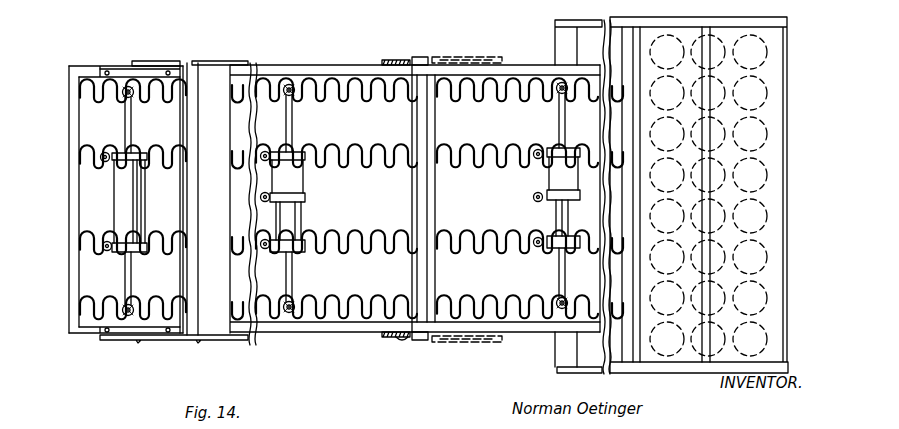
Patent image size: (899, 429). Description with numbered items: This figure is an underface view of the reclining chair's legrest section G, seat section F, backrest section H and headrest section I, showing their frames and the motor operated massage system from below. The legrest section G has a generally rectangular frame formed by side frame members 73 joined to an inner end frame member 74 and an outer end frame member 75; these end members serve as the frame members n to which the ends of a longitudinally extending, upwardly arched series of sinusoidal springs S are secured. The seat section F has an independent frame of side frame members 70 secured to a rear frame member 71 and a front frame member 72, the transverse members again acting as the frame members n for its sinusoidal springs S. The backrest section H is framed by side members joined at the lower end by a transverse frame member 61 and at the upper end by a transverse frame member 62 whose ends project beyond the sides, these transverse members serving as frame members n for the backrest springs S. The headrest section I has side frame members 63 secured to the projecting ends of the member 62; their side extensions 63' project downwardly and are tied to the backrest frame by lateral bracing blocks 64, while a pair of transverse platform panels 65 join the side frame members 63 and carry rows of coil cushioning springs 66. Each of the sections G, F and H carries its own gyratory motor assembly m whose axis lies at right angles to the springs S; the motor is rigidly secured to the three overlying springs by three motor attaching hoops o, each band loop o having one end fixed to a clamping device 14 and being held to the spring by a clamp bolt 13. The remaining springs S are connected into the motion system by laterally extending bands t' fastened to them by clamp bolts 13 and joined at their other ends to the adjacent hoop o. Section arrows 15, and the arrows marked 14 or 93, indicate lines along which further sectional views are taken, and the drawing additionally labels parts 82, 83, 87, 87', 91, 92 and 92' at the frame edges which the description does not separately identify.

The clamp bolt 13 is at (128, 90).
The clamping device 14 is at (242, 5).
The section line 15 is at (262, 40).
The transverse frame member 61 is at (436, 124).
The transverse frame member 62 is at (638, 40).
The side frame member 63 is at (699, 198).
The side extension 63' is at (559, 373).
The lateral bracing block 64 is at (566, 34).
The transverse platform panel 65 is at (704, 30).
The coil cushioning spring 66 is at (766, 82).
The side frame member 70 is at (266, 66).
The rear frame member 71 is at (414, 120).
The front frame member 72 is at (210, 88).
The side frame member 73 is at (84, 67).
The inner end frame member 74 is at (192, 179).
The outer end frame member 75 is at (70, 130).
The block 82 is at (420, 61).
The plate 83 is at (488, 56).
The hatched plate 87 is at (385, 214).
The plate 87' is at (410, 206).
The plate 91 is at (178, 62).
The top plate 92 is at (156, 49).
The bottom plate 92' is at (174, 190).
The section line 93 is at (363, 9).
The sinusoidal spring S is at (84, 106).
The laterally extending band t' is at (340, 199).
The motor attaching hoop o is at (136, 152).
The gyratory motor assembly m is at (118, 200).
The frame member n is at (68, 216).
The legrest section G is at (100, 348).
The seat section F is at (270, 336).
The backrest section H is at (514, 40).
The headrest section I is at (792, 142).